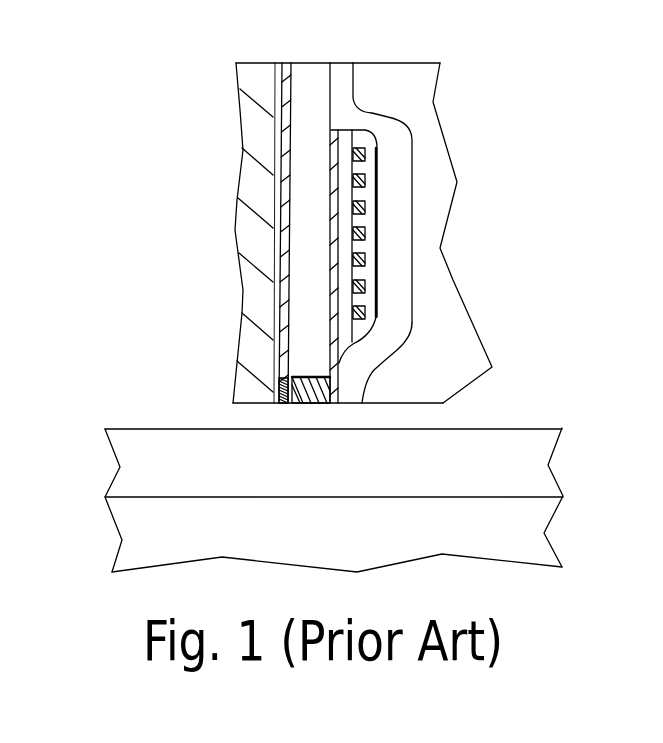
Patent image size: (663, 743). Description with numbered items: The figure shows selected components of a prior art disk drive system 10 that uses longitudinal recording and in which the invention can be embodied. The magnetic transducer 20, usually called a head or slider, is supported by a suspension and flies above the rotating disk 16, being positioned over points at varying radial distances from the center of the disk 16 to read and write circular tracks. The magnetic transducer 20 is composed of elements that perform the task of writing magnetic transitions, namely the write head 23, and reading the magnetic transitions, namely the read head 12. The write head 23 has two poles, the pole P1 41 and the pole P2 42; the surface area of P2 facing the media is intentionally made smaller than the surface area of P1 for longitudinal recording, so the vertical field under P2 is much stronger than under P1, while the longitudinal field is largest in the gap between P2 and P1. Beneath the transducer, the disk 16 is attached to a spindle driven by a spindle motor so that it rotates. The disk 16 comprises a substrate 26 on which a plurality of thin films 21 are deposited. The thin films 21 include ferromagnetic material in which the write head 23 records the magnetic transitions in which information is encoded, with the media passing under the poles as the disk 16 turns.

The disk drive system 10 is at (177, 112).
The read head 12 is at (278, 381).
The disk 16 is at (152, 415).
The magnetic transducer 20 is at (456, 254).
The thin films 21 is at (140, 460).
The write head 23 is at (347, 41).
The substrate 26 is at (135, 531).
The P1 pole of the write head 41 is at (307, 377).
The P2 pole of the write head 42 is at (365, 362).
The P1 pole P1 is at (320, 266).
The P2 pole P2 is at (417, 363).